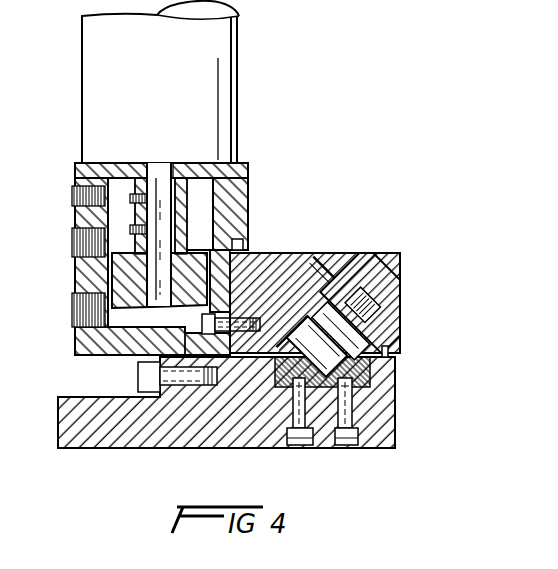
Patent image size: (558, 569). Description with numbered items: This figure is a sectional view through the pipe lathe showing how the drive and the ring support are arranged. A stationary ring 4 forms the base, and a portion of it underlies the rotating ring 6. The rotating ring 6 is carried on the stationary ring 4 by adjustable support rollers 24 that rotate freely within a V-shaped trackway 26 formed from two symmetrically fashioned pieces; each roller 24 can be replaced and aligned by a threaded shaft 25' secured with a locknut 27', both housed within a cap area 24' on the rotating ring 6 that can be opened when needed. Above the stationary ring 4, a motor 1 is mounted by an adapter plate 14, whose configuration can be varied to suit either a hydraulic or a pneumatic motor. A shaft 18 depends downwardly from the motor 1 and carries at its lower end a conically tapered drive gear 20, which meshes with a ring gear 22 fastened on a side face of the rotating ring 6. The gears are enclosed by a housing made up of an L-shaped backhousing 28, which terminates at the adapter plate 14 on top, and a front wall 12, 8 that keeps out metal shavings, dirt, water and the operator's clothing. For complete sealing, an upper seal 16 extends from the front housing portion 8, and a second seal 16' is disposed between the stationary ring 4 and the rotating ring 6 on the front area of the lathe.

The motor 1 is at (238, 50).
The stationary ring 4 is at (77, 443).
The rotating ring 6 is at (298, 256).
The front housing portion 8 is at (244, 214).
The front wall 12 is at (243, 192).
The adapter plate 14 is at (246, 163).
The upper seal 16 is at (261, 243).
The second seal 16' is at (407, 357).
The shaft 18 is at (153, 163).
The drive gear 20 is at (120, 275).
The ring gear 22 is at (208, 309).
The support roller 24 is at (357, 267).
The cap area 24' is at (361, 236).
The threaded shaft 25' is at (365, 289).
The trackway 26 is at (366, 376).
The locknut 27' is at (372, 331).
The backhousing 28 is at (82, 342).